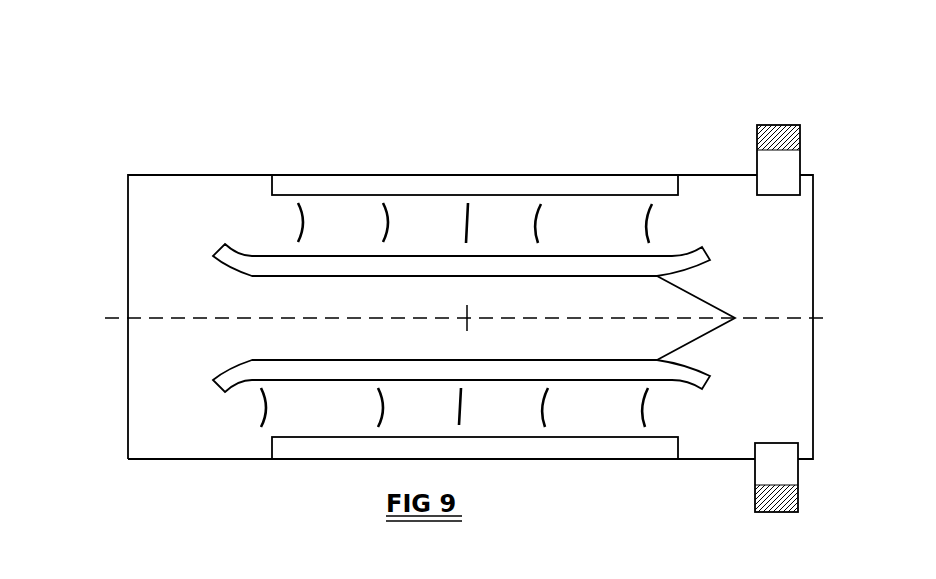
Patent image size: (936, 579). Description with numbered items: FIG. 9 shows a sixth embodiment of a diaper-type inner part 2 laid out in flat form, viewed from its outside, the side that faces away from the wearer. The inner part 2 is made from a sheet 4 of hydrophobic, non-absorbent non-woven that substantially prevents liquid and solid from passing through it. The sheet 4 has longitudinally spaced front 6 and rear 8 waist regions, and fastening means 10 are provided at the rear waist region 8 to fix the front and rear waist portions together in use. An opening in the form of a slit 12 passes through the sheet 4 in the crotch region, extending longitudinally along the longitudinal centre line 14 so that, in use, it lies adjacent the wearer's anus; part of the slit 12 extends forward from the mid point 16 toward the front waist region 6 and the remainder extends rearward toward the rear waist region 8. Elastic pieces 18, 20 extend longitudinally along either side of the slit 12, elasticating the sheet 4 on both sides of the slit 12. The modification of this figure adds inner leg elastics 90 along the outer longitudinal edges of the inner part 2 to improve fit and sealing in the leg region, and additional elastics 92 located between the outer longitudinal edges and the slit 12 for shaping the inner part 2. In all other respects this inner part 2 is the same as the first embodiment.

The inner part 2 is at (262, 134).
The sheet 4 is at (468, 194).
The front waist region 6 is at (153, 292).
The rear waist region 8 is at (775, 283).
The fastening means 10 is at (777, 124).
The slit 12 is at (592, 292).
The longitudinal centre line 14 is at (755, 322).
The mid point 16 is at (467, 318).
The elastic piece 18 is at (357, 265).
The elastic piece 20 is at (320, 367).
The inner leg elastics 90 is at (660, 186).
The additional elastics 92 is at (545, 410).